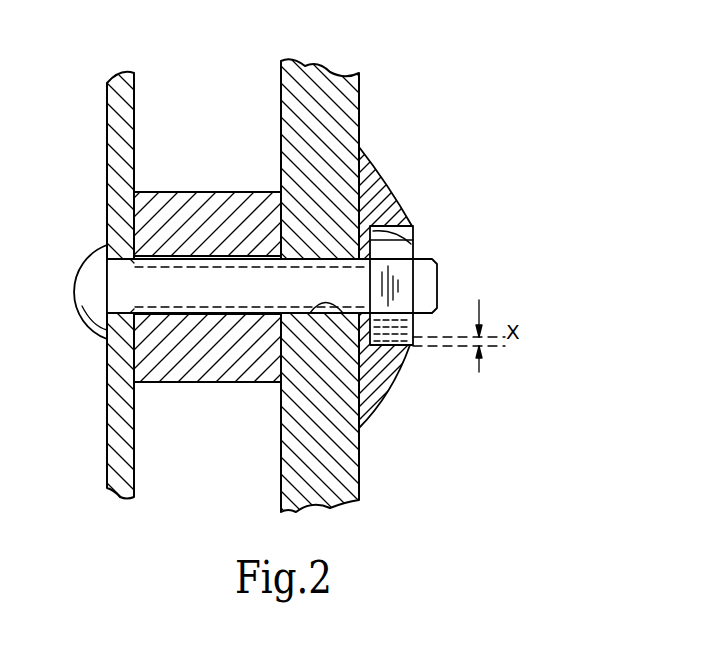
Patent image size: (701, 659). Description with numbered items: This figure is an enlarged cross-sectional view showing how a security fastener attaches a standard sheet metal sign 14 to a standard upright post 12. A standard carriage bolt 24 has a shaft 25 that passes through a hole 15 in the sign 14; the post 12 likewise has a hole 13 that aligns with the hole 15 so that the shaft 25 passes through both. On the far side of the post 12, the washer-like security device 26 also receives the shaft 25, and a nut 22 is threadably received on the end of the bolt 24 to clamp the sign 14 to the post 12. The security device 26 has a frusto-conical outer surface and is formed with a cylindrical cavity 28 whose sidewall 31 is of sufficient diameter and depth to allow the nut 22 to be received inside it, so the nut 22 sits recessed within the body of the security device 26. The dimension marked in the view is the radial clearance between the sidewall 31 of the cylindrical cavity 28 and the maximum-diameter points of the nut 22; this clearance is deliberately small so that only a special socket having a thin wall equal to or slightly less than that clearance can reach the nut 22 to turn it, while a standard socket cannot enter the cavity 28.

The upright post 12 is at (300, 69).
The hole 13 is at (337, 308).
The sheet metal sign 14 is at (120, 118).
The hole 15 is at (100, 308).
The nut 22 is at (438, 306).
The carriage bolt 24 is at (90, 265).
The shaft 25 is at (231, 297).
The security device 26 is at (370, 174).
The cylindrical cavity 28 is at (453, 266).
The sidewall 31 is at (412, 248).